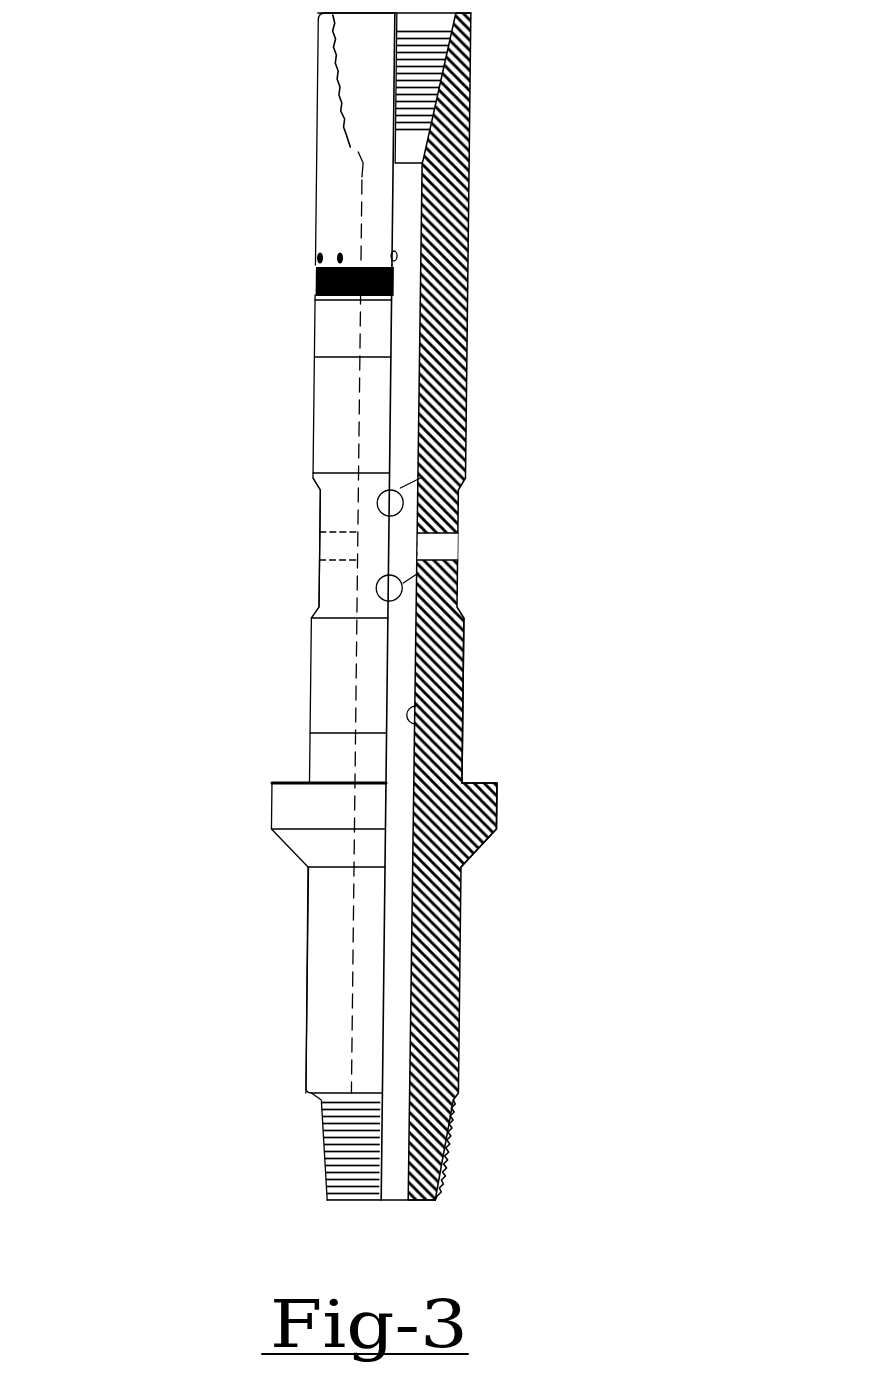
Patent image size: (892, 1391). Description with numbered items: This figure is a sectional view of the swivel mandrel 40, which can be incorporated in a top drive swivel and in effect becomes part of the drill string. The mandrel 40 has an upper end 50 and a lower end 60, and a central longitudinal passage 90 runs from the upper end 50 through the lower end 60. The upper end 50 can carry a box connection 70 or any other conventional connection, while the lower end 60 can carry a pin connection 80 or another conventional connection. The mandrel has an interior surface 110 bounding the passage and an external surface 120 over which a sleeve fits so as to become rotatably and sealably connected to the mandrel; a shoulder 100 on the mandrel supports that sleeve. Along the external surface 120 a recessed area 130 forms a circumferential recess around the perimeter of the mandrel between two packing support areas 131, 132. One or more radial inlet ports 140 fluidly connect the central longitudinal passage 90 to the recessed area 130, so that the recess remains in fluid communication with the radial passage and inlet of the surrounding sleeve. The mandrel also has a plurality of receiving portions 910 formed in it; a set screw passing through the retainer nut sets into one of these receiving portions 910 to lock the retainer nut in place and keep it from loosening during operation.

The swivel mandrel 40 is at (435, 650).
The upper end 50 is at (468, 100).
The lower end 60 is at (323, 1052).
The box connection 70 is at (348, 138).
The pin connection 80 is at (435, 1160).
The central longitudinal passage 90 is at (390, 1220).
The shoulder 100 is at (273, 815).
The interior surface 110 is at (465, 675).
The external surface 120 is at (317, 595).
The recessed area 130 is at (320, 503).
The packing support area 131 is at (310, 402).
The packing support area 132 is at (308, 682).
The radial inlet ports 140 is at (318, 540).
The receiving portions 910 is at (338, 257).